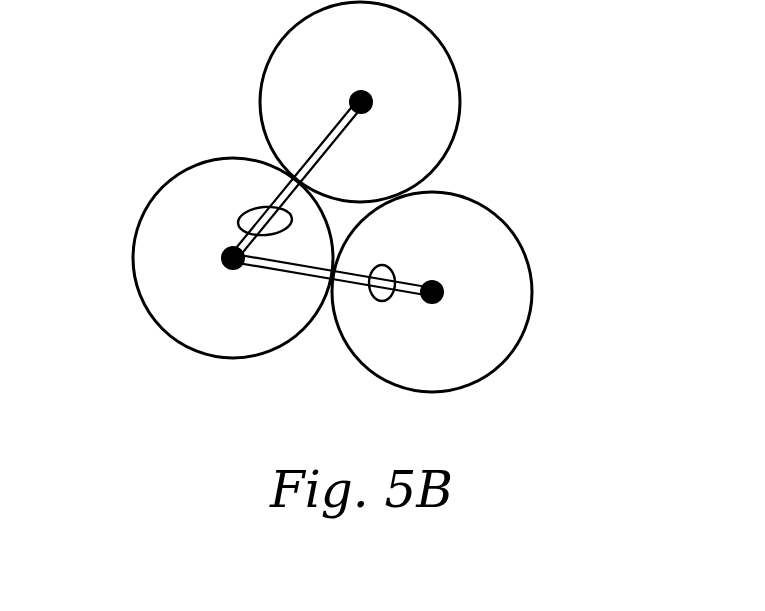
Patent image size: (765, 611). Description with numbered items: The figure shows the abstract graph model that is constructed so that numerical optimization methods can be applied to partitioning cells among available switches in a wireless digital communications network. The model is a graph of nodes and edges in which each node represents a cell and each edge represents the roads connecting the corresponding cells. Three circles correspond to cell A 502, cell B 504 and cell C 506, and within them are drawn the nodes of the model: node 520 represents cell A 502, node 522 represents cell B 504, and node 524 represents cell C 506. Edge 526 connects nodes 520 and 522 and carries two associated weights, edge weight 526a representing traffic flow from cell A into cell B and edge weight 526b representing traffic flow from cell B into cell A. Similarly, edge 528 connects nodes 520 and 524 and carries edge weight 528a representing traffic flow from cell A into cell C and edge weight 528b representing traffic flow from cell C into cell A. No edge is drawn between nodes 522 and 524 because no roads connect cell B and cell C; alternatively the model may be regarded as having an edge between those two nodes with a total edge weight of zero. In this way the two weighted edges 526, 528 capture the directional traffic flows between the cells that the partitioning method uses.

The cell A 502 is at (200, 243).
The cell B 504 is at (480, 292).
The cell C 506 is at (408, 102).
The node 520 is at (156, 247).
The node 522 is at (467, 278).
The node 524 is at (285, 90).
The edge 526 is at (334, 287).
The edge weight 526a is at (266, 296).
The edge weight 526b is at (399, 261).
The edge 528 is at (255, 180).
The edge weight 528a is at (354, 141).
The edge weight 528b is at (227, 185).